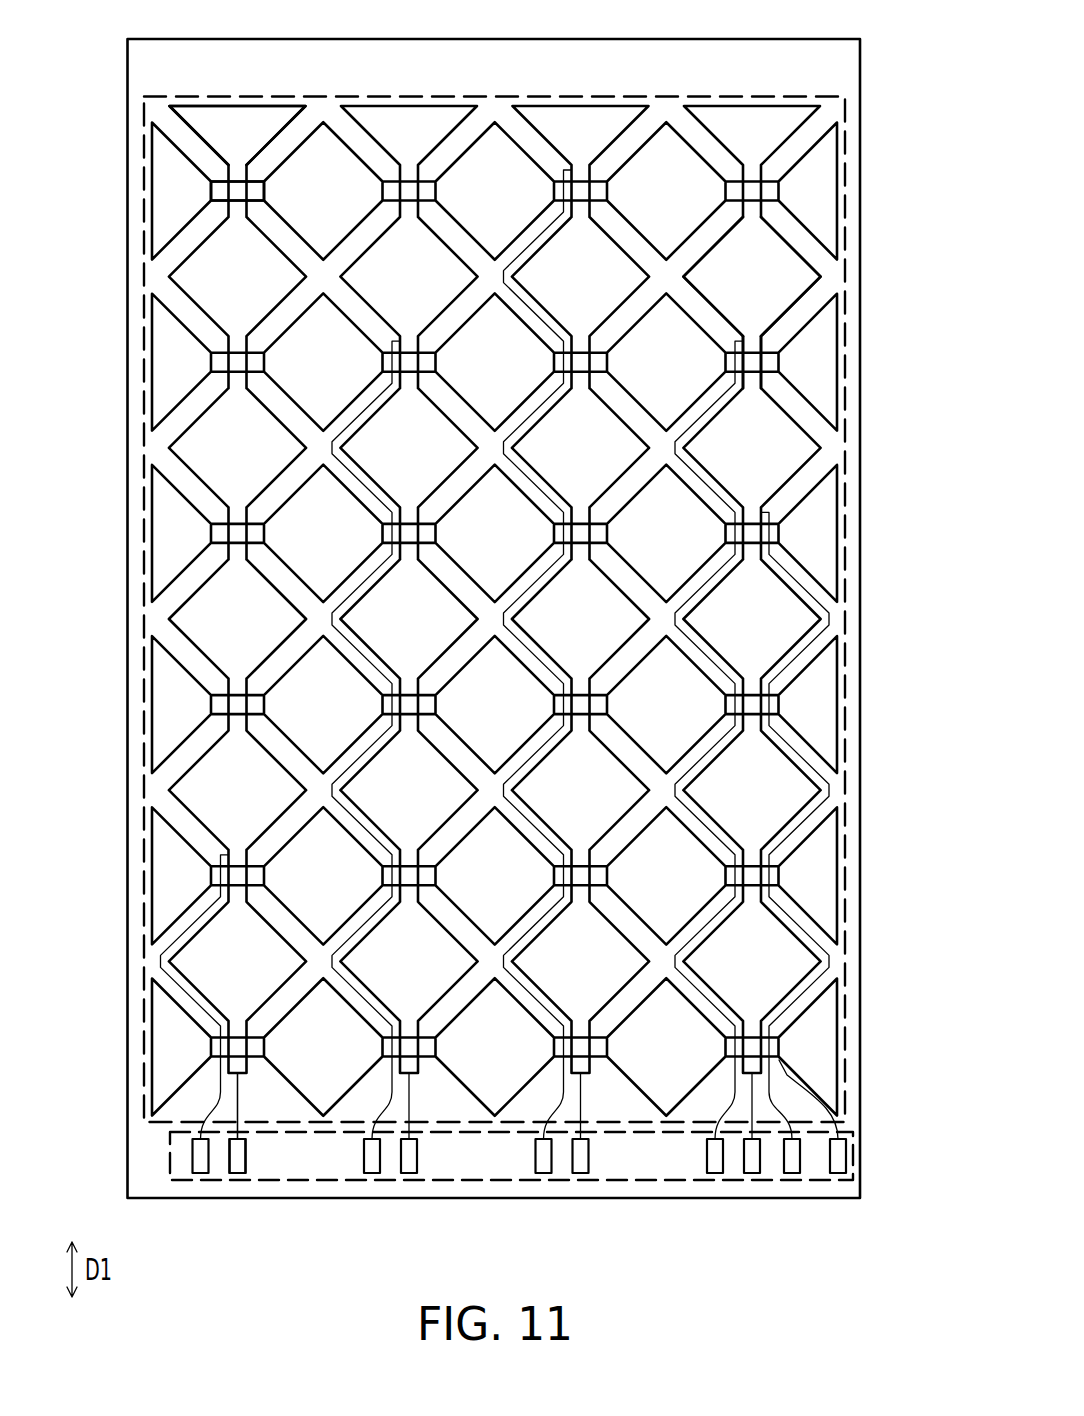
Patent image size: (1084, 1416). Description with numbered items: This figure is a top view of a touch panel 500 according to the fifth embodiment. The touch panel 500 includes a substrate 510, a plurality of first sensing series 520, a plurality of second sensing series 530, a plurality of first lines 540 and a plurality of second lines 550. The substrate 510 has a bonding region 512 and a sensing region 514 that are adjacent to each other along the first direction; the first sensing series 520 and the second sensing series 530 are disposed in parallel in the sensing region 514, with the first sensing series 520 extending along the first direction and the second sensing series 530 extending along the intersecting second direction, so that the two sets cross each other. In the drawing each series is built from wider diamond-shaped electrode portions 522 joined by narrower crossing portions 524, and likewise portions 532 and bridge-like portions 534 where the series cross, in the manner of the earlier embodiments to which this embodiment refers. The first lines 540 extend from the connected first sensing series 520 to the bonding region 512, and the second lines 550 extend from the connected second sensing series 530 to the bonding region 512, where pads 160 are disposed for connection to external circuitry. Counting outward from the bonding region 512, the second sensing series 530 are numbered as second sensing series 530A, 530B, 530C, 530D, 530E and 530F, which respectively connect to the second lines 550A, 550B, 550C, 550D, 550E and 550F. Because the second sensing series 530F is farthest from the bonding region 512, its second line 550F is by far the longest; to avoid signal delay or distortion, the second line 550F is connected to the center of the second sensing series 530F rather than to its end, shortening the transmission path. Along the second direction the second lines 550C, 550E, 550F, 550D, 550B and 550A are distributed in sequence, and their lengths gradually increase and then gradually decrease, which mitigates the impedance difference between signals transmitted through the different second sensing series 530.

The touch panel 500 is at (531, 673).
The substrate 510 is at (848, 53).
The bonding region 512 is at (170, 1158).
The sensing region 514 is at (848, 1052).
The first sensing series 520 is at (538, 561).
The second electrode pattern 522 is at (801, 255).
The connecting portion 524 is at (763, 346).
The second sensing series 530 is at (448, 601).
The first second sensing series 530A is at (139, 1057).
The second sensing series 530B is at (139, 885).
The second sensing series 530C is at (139, 714).
The second sensing series 530D is at (139, 557).
The second sensing series 530E is at (139, 355).
The sixth second sensing series 530F is at (139, 196).
The first electrode pattern 532 is at (297, 157).
The bridge line 534 is at (253, 182).
The first lines 540 is at (240, 1097).
The second lines 550 is at (540, 696).
The second line 550A is at (852, 1149).
The second line 550B is at (805, 882).
The second line 550C is at (229, 679).
The second line 550D is at (735, 679).
The second line 550E is at (392, 679).
The second line 550F is at (563, 679).
The pads 160 is at (240, 1168).